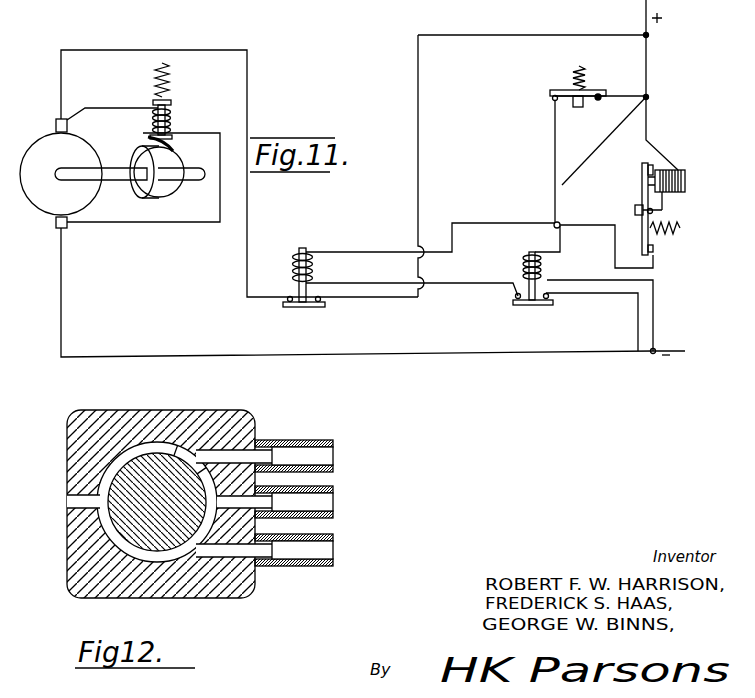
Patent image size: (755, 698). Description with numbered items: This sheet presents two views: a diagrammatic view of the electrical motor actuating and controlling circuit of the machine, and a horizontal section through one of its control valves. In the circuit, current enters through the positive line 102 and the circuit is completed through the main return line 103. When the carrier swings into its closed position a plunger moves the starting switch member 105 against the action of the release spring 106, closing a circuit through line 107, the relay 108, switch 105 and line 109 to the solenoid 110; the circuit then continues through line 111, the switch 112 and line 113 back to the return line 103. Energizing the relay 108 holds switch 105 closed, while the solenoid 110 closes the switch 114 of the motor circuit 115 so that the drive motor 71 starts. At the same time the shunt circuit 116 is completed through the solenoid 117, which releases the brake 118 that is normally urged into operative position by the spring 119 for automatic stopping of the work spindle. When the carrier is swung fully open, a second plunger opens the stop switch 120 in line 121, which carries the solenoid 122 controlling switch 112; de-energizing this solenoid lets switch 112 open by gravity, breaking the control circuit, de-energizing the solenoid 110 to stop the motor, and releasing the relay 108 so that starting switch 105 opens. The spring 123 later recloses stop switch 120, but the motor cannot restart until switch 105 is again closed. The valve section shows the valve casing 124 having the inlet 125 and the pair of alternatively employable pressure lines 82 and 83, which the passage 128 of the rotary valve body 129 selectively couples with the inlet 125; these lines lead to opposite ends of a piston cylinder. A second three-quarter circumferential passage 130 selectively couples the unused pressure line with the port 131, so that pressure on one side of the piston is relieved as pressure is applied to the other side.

In FIG. 11, the drive motor 71 is at (32, 158).
In FIG. 11, the positive line 102 is at (647, 24).
In FIG. 11, the main return line 103 is at (677, 352).
In FIG. 11, the switch member 105 is at (636, 209).
In FIG. 11, the release spring 106 is at (665, 238).
In FIG. 11, the line 107 is at (651, 126).
In FIG. 11, the relay 108 is at (676, 196).
In FIG. 11, the line 109 is at (485, 218).
In FIG. 11, the solenoid 110 is at (296, 274).
In FIG. 11, the line 111 is at (467, 284).
In FIG. 11, the switch 112 is at (531, 305).
In FIG. 11, the line 113 is at (614, 294).
In FIG. 11, the switch 114 is at (307, 317).
In FIG. 11, the motor circuit 115 is at (232, 50).
In FIG. 11, the shunt circuit 116 is at (138, 222).
In FIG. 11, the solenoid 117 is at (184, 118).
In FIG. 11, the brake 118 is at (160, 136).
In FIG. 11, the spring 119 is at (164, 93).
In FIG. 11, the stop switch 120 is at (607, 82).
In FIG. 11, the line 121 is at (560, 206).
In FIG. 11, the solenoid 122 is at (521, 266).
In FIG. 11, the spring 123 is at (575, 80).
In FIG. 12, the valve casing 124 is at (237, 582).
In FIG. 12, the inlet 125 is at (327, 500).
In FIG. 12, the passage 128 is at (255, 437).
In FIG. 12, the valve body 129 is at (178, 460).
In FIG. 12, the three-quarter circumferential passage 130 is at (118, 458).
In FIG. 12, the port 131 is at (74, 503).
In FIG. 12, the pressure line 82 is at (306, 441).
In FIG. 12, the pressure line 83 is at (328, 561).